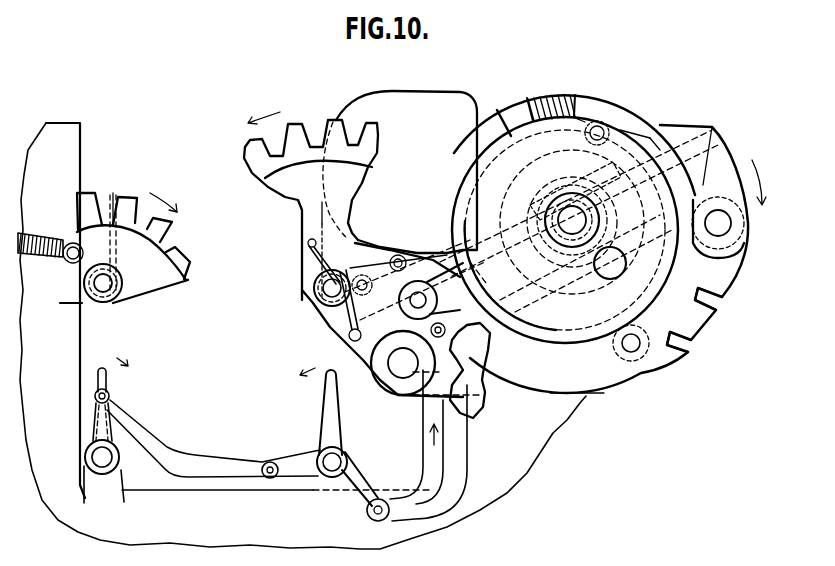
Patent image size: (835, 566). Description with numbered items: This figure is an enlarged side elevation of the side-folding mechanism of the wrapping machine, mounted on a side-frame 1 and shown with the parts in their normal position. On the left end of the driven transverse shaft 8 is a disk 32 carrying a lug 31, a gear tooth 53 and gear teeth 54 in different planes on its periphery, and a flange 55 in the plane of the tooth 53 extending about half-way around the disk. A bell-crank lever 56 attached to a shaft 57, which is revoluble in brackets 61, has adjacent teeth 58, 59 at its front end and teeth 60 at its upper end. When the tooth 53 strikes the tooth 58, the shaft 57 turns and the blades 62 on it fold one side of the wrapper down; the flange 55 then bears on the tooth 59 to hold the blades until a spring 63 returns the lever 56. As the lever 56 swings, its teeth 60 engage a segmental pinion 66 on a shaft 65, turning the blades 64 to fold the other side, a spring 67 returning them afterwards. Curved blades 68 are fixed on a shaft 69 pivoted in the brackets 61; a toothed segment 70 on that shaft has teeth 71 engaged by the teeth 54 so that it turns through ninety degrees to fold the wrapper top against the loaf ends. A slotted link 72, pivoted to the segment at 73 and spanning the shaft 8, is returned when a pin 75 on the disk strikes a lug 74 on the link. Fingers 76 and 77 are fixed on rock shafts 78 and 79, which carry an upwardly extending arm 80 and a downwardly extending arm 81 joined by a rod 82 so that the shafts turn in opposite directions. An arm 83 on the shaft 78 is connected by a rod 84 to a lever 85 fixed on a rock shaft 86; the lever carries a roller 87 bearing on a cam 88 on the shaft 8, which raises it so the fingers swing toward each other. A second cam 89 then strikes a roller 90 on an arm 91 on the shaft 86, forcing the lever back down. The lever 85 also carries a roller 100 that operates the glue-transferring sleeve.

The side-frame 1 is at (78, 145).
The transverse shaft 8 is at (580, 222).
The lug 31 is at (525, 97).
The disk 32 is at (580, 230).
The gear tooth 53 is at (448, 319).
The gear teeth 54 is at (694, 314).
The flange 55 is at (577, 379).
The bell-crank lever 56 is at (311, 210).
The shaft 57 is at (318, 290).
The tooth 58 is at (430, 262).
The tooth 59 is at (499, 282).
The teeth 60 is at (328, 128).
The brackets 61 is at (348, 328).
The blades 62 is at (318, 214).
The spring 63 is at (306, 258).
The blades 64 is at (116, 197).
The shaft 65 is at (106, 290).
The segmental pinion 66 is at (133, 248).
The spring 67 is at (50, 238).
The curved blades 68 is at (400, 172).
The shaft 69 is at (404, 380).
The toothed segment 70 is at (424, 434).
The teeth 71 is at (470, 370).
The slotted link 72 is at (651, 136).
The pivot 73 is at (410, 300).
The lug 74 is at (600, 125).
The pin 75 is at (610, 263).
The finger 76 is at (340, 420).
The finger 77 is at (108, 382).
The rock shaft 78 is at (342, 458).
The rock shaft 79 is at (103, 468).
The arm 80 is at (96, 422).
The arm 81 is at (296, 464).
The rod 82 is at (168, 450).
The arm 83 is at (372, 472).
The rod 84 is at (418, 504).
The lever 85 is at (720, 158).
The rock shaft 86 is at (733, 233).
The roller 87 is at (622, 130).
The cam 88 is at (485, 172).
The cam 89 is at (576, 118).
The roller 90 is at (645, 360).
The arm 91 is at (697, 318).
The roller 100 is at (358, 266).